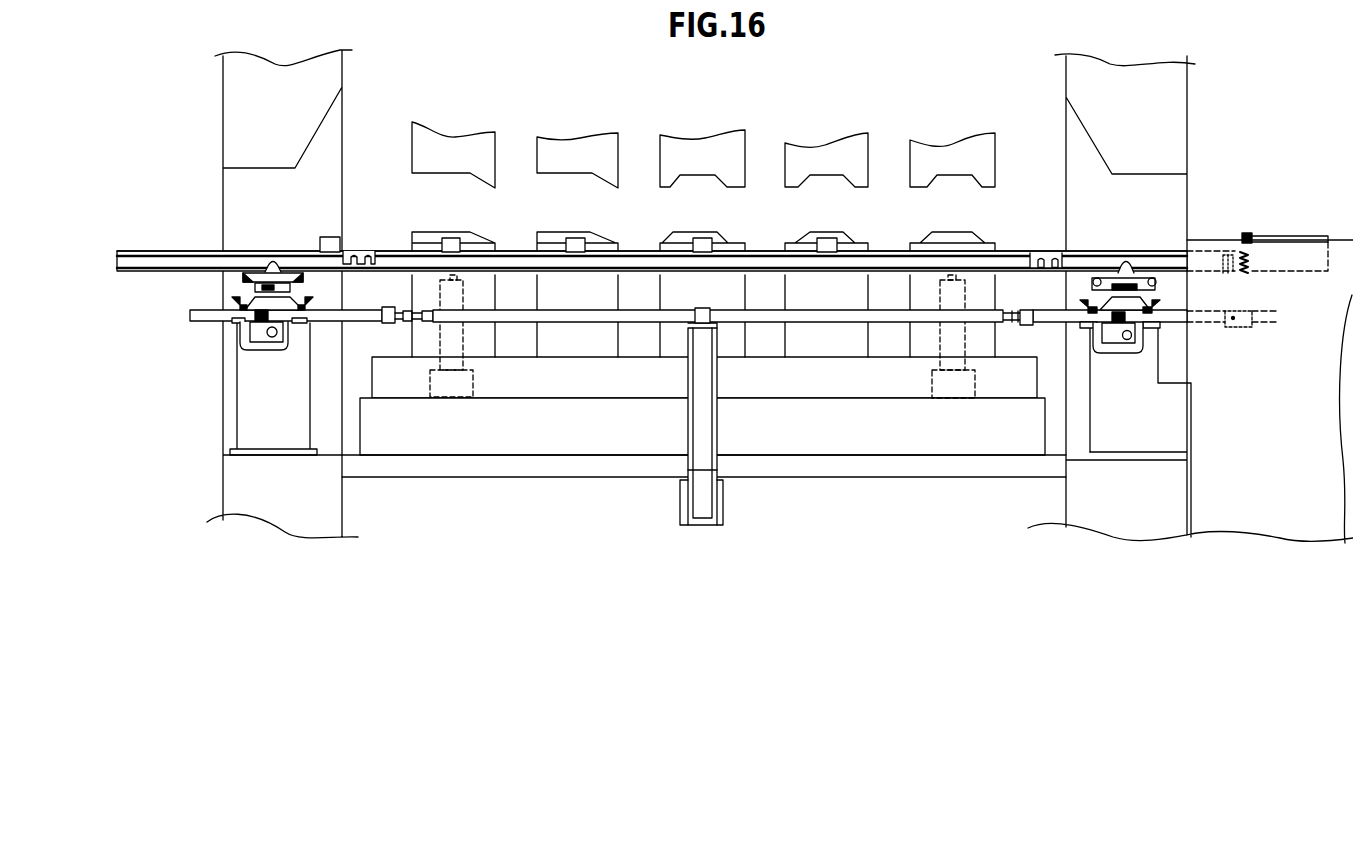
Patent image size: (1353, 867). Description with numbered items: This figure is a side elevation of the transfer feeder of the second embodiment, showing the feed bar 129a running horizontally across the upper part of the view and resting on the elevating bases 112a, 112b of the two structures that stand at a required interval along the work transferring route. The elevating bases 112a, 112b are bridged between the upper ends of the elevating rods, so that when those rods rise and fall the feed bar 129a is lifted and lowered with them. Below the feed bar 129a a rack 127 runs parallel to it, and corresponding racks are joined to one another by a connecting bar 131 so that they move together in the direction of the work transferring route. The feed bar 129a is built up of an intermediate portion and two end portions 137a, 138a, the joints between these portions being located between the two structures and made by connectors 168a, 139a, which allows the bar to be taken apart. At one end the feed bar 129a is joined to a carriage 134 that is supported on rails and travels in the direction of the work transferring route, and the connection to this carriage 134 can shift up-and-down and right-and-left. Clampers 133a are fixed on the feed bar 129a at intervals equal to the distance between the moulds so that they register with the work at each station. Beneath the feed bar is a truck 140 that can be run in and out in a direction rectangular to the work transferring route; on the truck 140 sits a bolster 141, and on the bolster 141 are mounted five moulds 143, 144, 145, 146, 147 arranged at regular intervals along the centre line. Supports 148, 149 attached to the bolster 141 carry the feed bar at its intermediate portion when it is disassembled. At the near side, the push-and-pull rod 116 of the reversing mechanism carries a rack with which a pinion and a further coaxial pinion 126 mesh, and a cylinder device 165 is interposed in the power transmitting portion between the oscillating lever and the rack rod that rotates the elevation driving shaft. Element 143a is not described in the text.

The elevating base 112a is at (243, 278).
The elevating base 112b is at (1147, 284).
The push-and-pull rod 116 is at (275, 337).
The pinion 126 is at (247, 338).
The rack 127 is at (218, 313).
The feed bar 129a is at (889, 251).
The connecting bar 131 is at (585, 313).
The clamper 133a is at (823, 245).
The carriage 134 is at (1297, 239).
The end portion of feed bar 137a is at (160, 251).
The end portion of feed bar 138a is at (1147, 253).
The connector 139a is at (1058, 257).
The truck 140 is at (592, 439).
The bolster 141 is at (542, 392).
The mould 143 is at (472, 213).
The stop blocks 143a is at (332, 246).
The mould 144 is at (593, 213).
The mould 145 is at (712, 213).
The mould 146 is at (840, 213).
The mould 147 is at (968, 213).
The support 148 is at (447, 392).
The support 149 is at (952, 370).
The cylinder device 165 is at (1270, 327).
The connector 168a is at (350, 247).